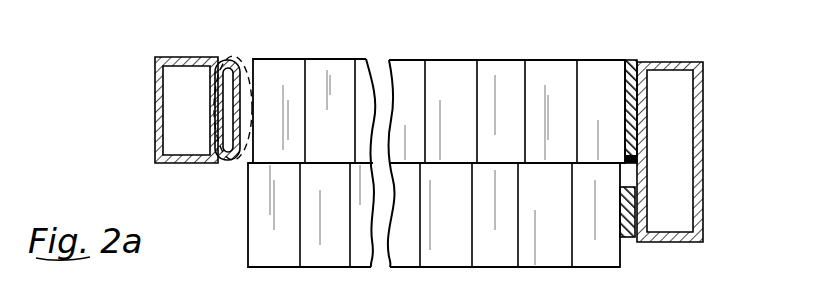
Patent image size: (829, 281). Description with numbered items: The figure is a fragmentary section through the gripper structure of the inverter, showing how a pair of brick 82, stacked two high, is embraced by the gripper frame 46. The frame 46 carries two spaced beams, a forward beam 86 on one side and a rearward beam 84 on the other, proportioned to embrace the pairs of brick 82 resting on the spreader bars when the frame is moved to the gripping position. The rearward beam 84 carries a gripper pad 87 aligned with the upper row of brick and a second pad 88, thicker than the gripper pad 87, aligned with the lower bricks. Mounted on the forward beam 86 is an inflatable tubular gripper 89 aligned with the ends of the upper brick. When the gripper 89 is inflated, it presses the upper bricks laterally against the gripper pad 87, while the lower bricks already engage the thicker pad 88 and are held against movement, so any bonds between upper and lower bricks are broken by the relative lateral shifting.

The gripper frame 46 is at (428, 121).
The pair of brick 82 is at (448, 68).
The rearward beam 84 is at (703, 160).
The forward beam 86 is at (155, 110).
The gripper pad 87 is at (633, 62).
The second pad 88 is at (629, 240).
The inflatable tubular gripper 89 is at (242, 58).